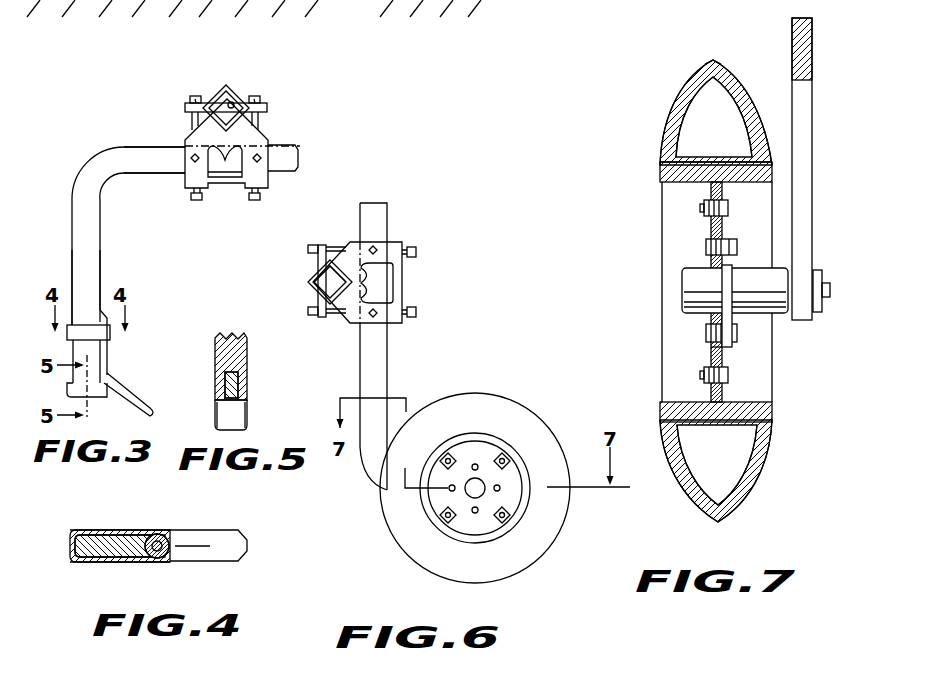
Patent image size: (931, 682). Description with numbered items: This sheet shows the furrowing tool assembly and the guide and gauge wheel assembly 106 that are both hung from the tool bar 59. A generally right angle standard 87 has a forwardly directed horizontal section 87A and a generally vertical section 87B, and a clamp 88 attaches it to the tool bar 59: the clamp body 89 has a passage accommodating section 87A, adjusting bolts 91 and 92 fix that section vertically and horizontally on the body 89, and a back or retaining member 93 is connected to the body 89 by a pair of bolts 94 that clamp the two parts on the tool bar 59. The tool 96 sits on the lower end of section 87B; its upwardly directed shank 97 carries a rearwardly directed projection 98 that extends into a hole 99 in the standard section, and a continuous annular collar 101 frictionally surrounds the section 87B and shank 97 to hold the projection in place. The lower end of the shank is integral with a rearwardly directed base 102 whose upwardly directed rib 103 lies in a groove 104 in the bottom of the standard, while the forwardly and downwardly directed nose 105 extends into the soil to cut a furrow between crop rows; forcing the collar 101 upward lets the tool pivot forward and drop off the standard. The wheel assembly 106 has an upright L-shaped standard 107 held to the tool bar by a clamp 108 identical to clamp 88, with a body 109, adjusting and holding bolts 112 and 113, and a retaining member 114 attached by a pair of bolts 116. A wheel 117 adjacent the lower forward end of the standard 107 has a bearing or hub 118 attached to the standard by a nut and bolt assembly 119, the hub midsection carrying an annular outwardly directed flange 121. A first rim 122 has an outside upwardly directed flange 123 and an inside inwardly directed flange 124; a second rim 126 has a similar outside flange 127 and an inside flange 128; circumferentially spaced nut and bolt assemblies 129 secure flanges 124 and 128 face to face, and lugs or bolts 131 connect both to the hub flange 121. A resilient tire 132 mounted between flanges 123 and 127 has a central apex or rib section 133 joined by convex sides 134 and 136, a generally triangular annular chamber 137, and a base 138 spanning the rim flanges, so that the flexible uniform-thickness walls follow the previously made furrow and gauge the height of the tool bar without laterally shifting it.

In FIG. 3, the tool bar 59 is at (232, 107).
In FIG. 6, the tool bar 59 is at (312, 278).
In FIG. 3, the standard 87 is at (85, 219).
In FIG. 3, the horizontal section 87A is at (162, 152).
In FIG. 3, the vertical section 87B is at (88, 248).
In FIG. 5, the vertical section 87B is at (217, 362).
In FIG. 4, the vertical section 87B is at (100, 561).
In FIG. 3, the clamp 88 is at (278, 135).
In FIG. 3, the body 89 is at (257, 176).
In FIG. 3, the adjusting bolt 91 is at (253, 201).
In FIG. 3, the adjusting bolt 92 is at (262, 158).
In FIG. 3, the retaining member 93 is at (225, 86).
In FIG. 3, the bolts 94 is at (194, 97).
In FIG. 3, the tool 96 is at (118, 375).
In FIG. 5, the tool 96 is at (256, 426).
In FIG. 4, the tool 96 is at (222, 516).
In FIG. 3, the shank 97 is at (108, 354).
In FIG. 4, the shank 97 is at (157, 535).
In FIG. 4, the projection 98 is at (152, 548).
In FIG. 4, the hole 99 is at (143, 542).
In FIG. 3, the collar 101 is at (85, 327).
In FIG. 4, the collar 101 is at (85, 532).
In FIG. 3, the base 102 is at (97, 396).
In FIG. 5, the base 102 is at (218, 400).
In FIG. 5, the rib 103 is at (245, 383).
In FIG. 5, the groove 104 is at (245, 358).
In FIG. 3, the nose 105 is at (137, 394).
In FIG. 4, the nose 105 is at (243, 542).
In FIG. 6, the guide and gauge wheel assembly 106 is at (475, 319).
In FIG. 7, the guide and gauge wheel assembly 106 is at (647, 125).
In FIG. 6, the standard 107 is at (378, 372).
In FIG. 7, the standard 107 is at (802, 140).
In FIG. 6, the clamp 108 is at (418, 232).
In FIG. 6, the body 109 is at (350, 250).
In FIG. 6, the adjusting and holding bolt 112 is at (416, 311).
In FIG. 6, the adjusting and holding bolt 113 is at (378, 248).
In FIG. 6, the retaining member 114 is at (315, 300).
In FIG. 6, the bolts 116 is at (327, 247).
In FIG. 6, the wheel 117 is at (547, 400).
In FIG. 7, the wheel 117 is at (653, 319).
In FIG. 6, the hub 118 is at (478, 492).
In FIG. 7, the hub 118 is at (695, 288).
In FIG. 7, the nut and bolt assembly 119 is at (827, 275).
In FIG. 7, the flange 121 is at (732, 347).
In FIG. 7, the first rim 122 is at (687, 183).
In FIG. 7, the flange 123 is at (677, 182).
In FIG. 7, the flange 124 is at (705, 228).
In FIG. 7, the second rim 126 is at (757, 393).
In FIG. 7, the flange 127 is at (772, 414).
In FIG. 7, the flange 128 is at (731, 356).
In FIG. 7, the nut and bolt assemblies 129 is at (700, 208).
In FIG. 7, the bolts 131 is at (737, 331).
In FIG. 7, the tire 132 is at (740, 59).
In FIG. 6, the rib section 133 is at (570, 508).
In FIG. 7, the rib section 133 is at (713, 61).
In FIG. 6, the side 134 is at (538, 522).
In FIG. 7, the side 134 is at (688, 90).
In FIG. 7, the side 136 is at (752, 110).
In FIG. 7, the chamber 137 is at (728, 137).
In FIG. 7, the base 138 is at (716, 471).